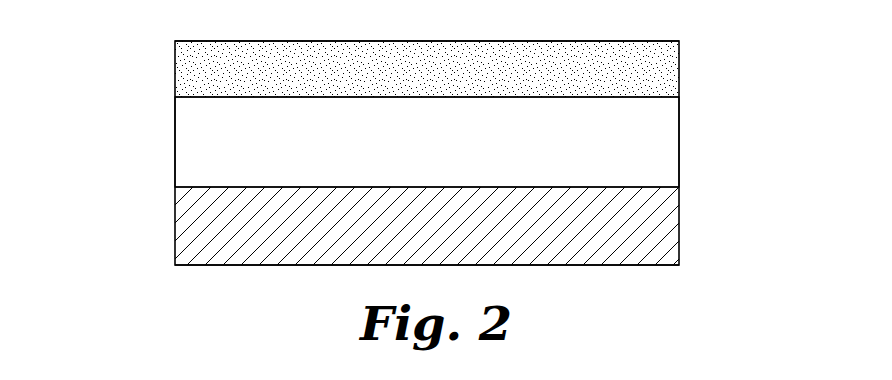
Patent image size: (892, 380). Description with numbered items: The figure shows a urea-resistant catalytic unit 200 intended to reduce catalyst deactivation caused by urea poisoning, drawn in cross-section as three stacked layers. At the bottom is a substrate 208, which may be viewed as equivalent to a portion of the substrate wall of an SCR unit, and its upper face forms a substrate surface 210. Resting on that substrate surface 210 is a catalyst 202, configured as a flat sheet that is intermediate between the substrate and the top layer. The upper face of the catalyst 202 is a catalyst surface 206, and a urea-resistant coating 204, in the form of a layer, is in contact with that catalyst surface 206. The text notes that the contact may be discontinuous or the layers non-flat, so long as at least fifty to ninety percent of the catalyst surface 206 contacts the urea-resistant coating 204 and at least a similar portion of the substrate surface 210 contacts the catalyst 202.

The urea-resistant catalytic unit 200 is at (115, 111).
The catalyst 202 is at (679, 144).
The urea-resistant coating 204 is at (679, 69).
The catalyst surface 206 is at (679, 98).
The substrate 208 is at (679, 227).
The substrate surface 210 is at (157, 187).